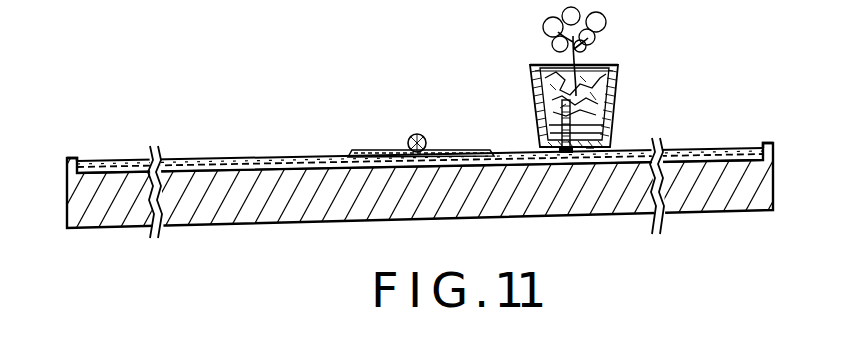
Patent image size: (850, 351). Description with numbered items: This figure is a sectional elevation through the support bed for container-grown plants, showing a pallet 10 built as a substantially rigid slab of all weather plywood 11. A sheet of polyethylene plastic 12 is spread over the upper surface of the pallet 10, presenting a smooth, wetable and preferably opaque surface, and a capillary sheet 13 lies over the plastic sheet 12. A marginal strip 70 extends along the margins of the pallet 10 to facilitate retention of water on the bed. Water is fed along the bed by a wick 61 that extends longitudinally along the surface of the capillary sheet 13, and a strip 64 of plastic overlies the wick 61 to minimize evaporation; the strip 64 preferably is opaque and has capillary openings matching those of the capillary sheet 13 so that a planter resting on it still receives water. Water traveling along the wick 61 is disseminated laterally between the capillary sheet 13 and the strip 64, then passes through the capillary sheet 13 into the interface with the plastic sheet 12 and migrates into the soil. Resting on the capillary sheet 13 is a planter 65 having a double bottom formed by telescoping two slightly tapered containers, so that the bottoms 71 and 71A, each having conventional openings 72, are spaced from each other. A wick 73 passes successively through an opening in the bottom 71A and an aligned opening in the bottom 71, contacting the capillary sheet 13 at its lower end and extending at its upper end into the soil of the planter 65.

The pallet 10 is at (313, 230).
The all weather plywood 11 is at (429, 205).
The polyethylene plastic sheet 12 is at (185, 172).
The capillary sheet 13 is at (243, 159).
The wick 61 is at (418, 134).
The strip of plastic 64 is at (389, 126).
The planter 65 is at (577, 105).
The marginal strip 70 is at (71, 157).
The bottom 71 is at (553, 149).
The bottom 71A is at (617, 112).
The openings 72 is at (591, 150).
The wick 73 is at (545, 105).